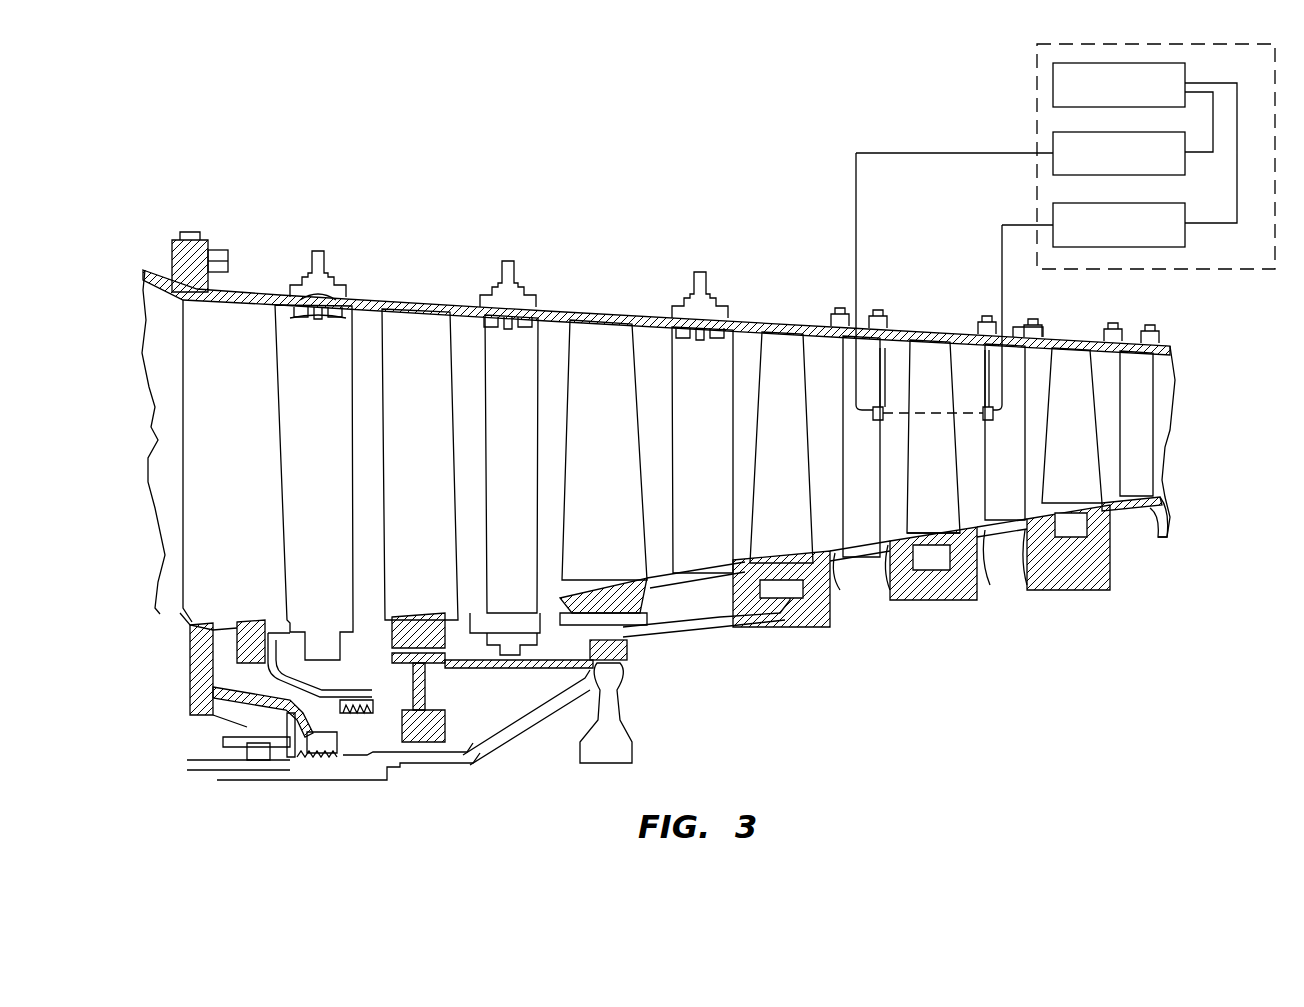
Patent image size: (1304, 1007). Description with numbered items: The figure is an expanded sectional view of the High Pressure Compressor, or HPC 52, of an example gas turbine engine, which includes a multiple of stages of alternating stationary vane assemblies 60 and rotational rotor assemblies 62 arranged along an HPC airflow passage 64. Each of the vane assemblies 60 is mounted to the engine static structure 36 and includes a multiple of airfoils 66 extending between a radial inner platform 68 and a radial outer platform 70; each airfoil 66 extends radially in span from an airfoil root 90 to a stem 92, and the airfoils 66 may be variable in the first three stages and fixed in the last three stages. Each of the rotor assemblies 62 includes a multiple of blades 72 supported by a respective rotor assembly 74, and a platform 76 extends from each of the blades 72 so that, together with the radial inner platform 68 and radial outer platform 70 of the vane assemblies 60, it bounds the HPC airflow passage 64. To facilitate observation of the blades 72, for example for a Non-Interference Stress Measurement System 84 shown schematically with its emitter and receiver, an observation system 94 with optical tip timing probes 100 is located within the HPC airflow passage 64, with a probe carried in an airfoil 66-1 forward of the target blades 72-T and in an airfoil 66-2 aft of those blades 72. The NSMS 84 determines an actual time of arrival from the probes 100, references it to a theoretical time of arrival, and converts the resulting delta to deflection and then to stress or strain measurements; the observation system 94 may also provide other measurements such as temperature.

The engine static structure 36 is at (205, 232).
The HPC 52 is at (752, 192).
The stationary vane assemblies 60 is at (318, 248).
The rotational rotor assemblies 62 is at (422, 745).
The HPC airflow passage 64 is at (142, 427).
The airfoils 66 is at (330, 491).
The airfoil forward of the target blades 66-1 is at (866, 520).
The airfoil aft of the target blades 66-2 is at (1012, 495).
The radial inner platform 68 is at (350, 640).
The radial outer platform 70 is at (336, 296).
The blades 72 is at (435, 503).
The target blades 72-T is at (942, 498).
The rotor assembly 74 is at (548, 720).
The platform 76 is at (590, 594).
The Non-Interference Stress Measurement System 84 is at (1035, 83).
The airfoil root 90 is at (320, 630).
The stem 92 is at (312, 314).
The observation system 94 is at (970, 440).
The optical tip timing probes 100 is at (987, 395).